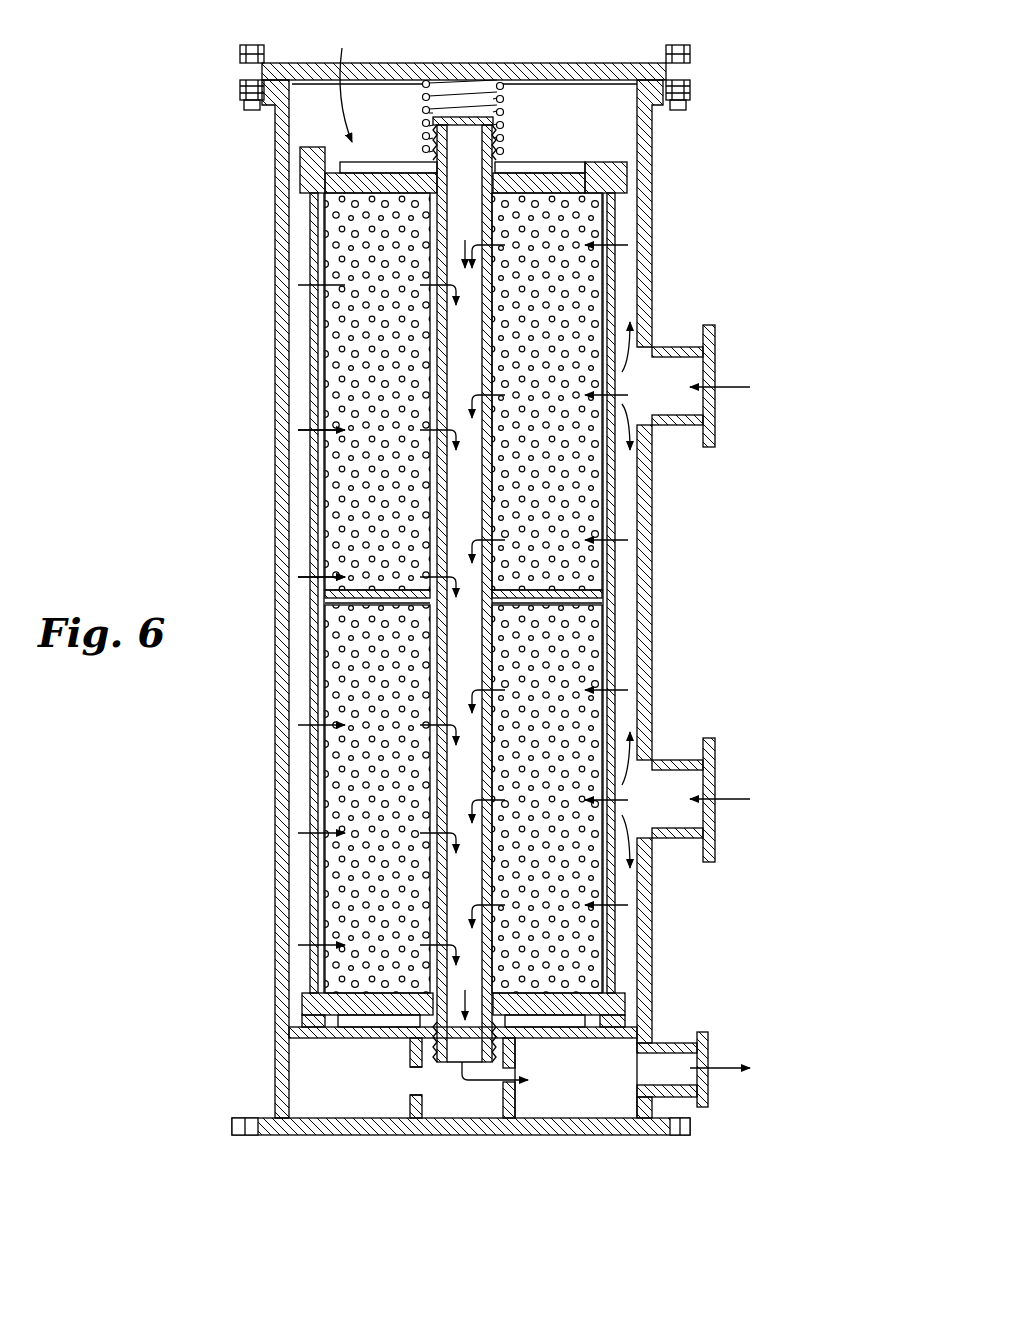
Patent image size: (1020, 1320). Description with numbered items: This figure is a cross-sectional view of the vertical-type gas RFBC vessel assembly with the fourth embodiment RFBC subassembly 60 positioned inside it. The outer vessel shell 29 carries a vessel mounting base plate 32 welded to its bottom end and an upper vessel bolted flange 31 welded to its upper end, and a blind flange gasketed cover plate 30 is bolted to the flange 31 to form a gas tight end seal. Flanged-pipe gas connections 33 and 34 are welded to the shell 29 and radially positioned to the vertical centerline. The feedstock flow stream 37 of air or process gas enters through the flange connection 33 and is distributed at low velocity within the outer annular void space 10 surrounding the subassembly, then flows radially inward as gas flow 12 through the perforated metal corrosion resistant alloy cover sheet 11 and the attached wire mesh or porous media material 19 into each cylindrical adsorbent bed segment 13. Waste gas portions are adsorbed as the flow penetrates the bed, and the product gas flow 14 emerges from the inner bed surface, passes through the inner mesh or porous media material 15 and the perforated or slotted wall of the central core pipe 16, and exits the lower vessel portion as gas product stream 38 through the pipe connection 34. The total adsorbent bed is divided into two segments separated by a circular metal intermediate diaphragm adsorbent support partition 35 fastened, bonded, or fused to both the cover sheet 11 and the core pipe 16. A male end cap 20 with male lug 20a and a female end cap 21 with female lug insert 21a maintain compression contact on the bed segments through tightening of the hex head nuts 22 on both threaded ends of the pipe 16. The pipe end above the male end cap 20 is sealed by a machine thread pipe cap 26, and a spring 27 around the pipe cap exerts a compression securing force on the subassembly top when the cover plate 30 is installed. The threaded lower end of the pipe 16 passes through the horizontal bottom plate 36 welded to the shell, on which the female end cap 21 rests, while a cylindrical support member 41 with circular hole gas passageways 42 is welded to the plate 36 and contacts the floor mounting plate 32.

The outer annular void space 10 is at (312, 300).
The perforated metal corrosion resistant alloy cover sheet 11 is at (327, 422).
The radially-inward gas flow 12 is at (638, 230).
The adsorbent bed segment 13 is at (612, 280).
The product gas flow 14 is at (477, 392).
The inner wire mesh or porous media material 15 is at (620, 490).
The central core pipe 16 is at (477, 512).
The outer wire mesh or porous media material 19 is at (324, 702).
The male end cap 20 is at (540, 162).
The male lug 20a is at (343, 165).
The female end cap 21 is at (620, 1010).
The female lug insert 21a is at (312, 1020).
The hex head nut 22 is at (400, 175).
The machine thread pipe cap 26 is at (445, 117).
The spring 27 is at (420, 103).
The outer vessel shell 29 is at (287, 245).
The gasketed cover plate 30 is at (240, 70).
The upper vessel bolted flange 31 is at (240, 92).
The vessel mounting base plate 32 is at (250, 1122).
The flange connection 33 is at (706, 325).
The pipe connection 34 is at (706, 1035).
The intermediate diaphragm adsorbent support partition 35 is at (378, 588).
The bottom plate 36 is at (572, 1040).
The feedstock flow stream 37 is at (745, 387).
The gas product stream 38 is at (475, 1145).
The cylindrical support member 41 is at (405, 1100).
The circular hole gas passageway 42 is at (405, 1078).
The RFBC subassembly 60 is at (335, 81).